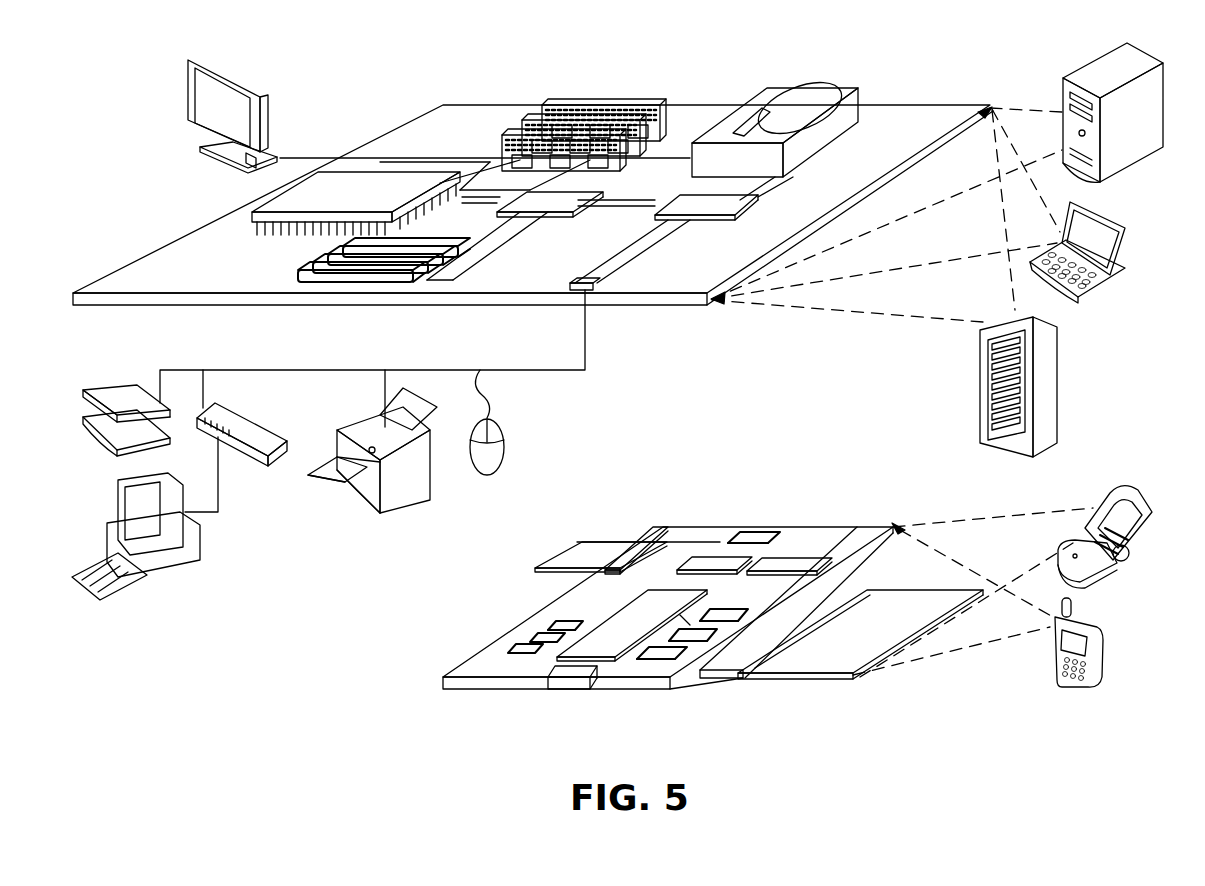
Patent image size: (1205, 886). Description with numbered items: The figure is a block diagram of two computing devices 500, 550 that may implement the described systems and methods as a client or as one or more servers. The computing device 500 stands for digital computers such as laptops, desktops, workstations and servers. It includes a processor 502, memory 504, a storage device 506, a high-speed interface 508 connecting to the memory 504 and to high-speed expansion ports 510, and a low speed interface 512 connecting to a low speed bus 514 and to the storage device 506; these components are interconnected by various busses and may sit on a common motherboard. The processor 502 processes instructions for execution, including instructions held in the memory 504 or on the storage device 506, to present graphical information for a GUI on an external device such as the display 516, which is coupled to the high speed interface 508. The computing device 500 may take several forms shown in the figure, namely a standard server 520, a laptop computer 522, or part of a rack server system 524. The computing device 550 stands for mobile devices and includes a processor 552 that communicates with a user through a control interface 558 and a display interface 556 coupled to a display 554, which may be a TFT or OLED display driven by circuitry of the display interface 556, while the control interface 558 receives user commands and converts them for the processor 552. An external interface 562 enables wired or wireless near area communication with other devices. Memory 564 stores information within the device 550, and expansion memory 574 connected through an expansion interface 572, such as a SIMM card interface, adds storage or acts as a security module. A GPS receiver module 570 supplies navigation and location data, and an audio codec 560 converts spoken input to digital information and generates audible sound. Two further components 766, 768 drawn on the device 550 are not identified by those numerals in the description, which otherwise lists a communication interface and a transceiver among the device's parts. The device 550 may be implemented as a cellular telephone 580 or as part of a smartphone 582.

The computing device 500 is at (372, 72).
The processor 502 is at (254, 217).
The memory 504 is at (558, 112).
The storage device 506 is at (772, 96).
The high-speed interface 508 is at (517, 207).
The high-speed expansion ports 510 is at (305, 270).
The low speed interface 512 is at (693, 200).
The low speed bus 514 is at (596, 289).
The display 516 is at (195, 61).
The standard server 520 is at (1064, 99).
The laptop computer 522 is at (1124, 233).
The rack server system 524 is at (980, 413).
The computing device 550 is at (418, 690).
The processor 552 is at (605, 648).
The display 554 is at (822, 662).
The display interface 556 is at (668, 655).
The control interface 558 is at (690, 633).
The audio codec 560 is at (723, 617).
The external interface 562 is at (574, 678).
The memory 564 is at (537, 637).
The GPS receiver module 570 is at (766, 530).
The expansion interface 572 is at (650, 540).
The expansion memory 574 is at (590, 543).
The cellular telephone 580 is at (1089, 502).
The smartphone 582 is at (1056, 652).
The component 766 is at (717, 560).
The component 768 is at (788, 562).